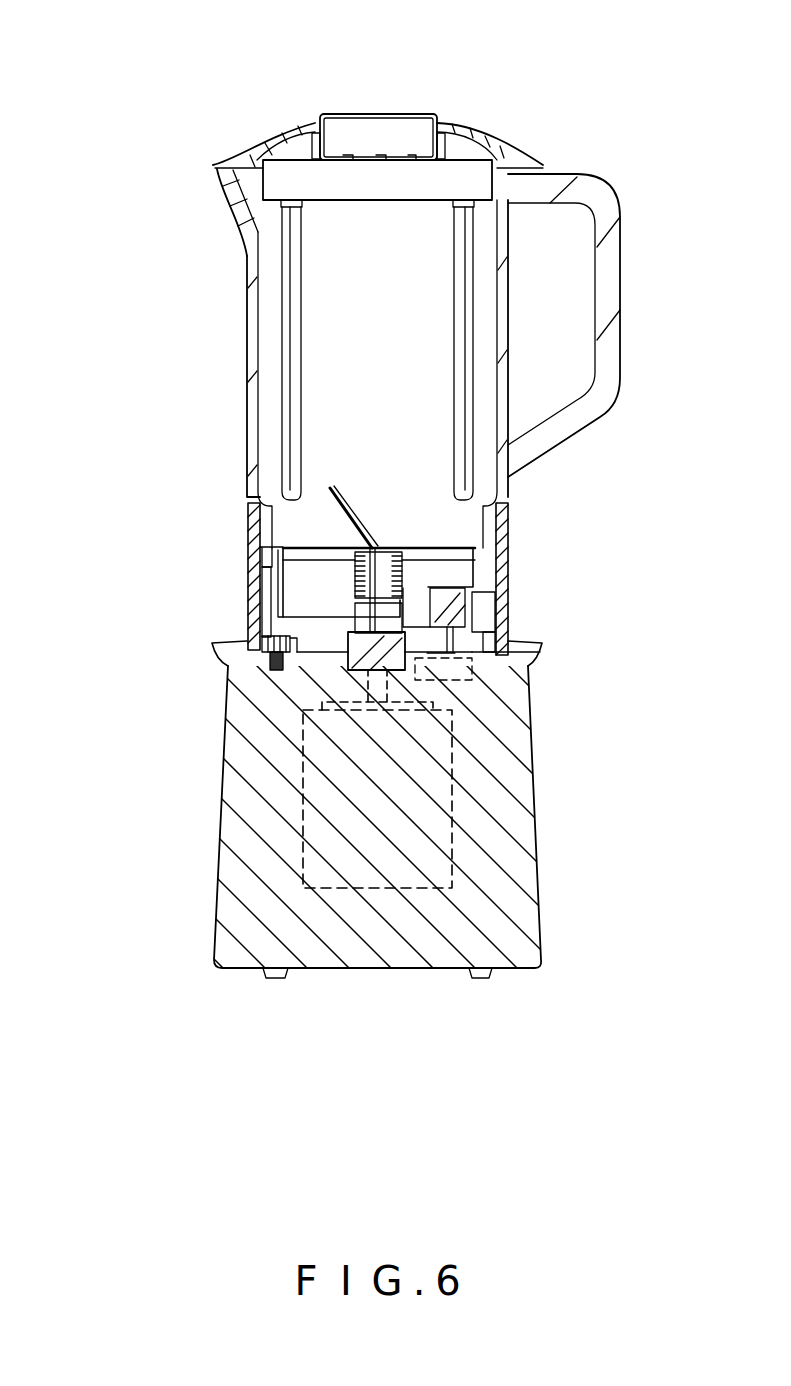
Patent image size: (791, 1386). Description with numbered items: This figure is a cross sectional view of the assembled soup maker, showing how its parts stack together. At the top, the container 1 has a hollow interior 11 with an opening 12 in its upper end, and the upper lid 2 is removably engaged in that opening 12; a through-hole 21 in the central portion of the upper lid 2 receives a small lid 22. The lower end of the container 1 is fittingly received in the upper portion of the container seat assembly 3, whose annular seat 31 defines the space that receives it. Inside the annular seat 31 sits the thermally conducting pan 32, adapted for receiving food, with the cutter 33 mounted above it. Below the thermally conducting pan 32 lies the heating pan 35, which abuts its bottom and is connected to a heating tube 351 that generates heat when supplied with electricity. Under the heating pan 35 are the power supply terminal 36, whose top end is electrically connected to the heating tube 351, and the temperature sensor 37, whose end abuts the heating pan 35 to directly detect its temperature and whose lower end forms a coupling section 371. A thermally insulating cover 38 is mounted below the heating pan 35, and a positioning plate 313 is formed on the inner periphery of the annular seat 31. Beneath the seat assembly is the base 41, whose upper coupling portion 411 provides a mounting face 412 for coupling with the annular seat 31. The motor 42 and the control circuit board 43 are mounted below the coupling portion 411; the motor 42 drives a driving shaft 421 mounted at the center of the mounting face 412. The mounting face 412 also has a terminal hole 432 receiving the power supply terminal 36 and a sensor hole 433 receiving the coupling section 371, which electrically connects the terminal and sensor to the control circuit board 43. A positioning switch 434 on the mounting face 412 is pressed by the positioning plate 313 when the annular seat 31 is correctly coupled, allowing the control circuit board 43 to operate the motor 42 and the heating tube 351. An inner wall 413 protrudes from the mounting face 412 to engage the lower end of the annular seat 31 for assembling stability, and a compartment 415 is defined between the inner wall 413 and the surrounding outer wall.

The container 1 is at (220, 272).
The hollow interior 11 is at (328, 318).
The opening 12 is at (340, 225).
The upper lid 2 is at (505, 140).
The through-hole 21 is at (445, 140).
The small lid 22 is at (398, 108).
The container seat assembly 3 is at (518, 538).
The annular seat 31 is at (445, 570).
The positioning plate 313 is at (265, 620).
The thermally conducting pan 32 is at (438, 590).
The cutter 33 is at (338, 505).
The heating pan 35 is at (283, 596).
The heating tube 351 is at (276, 612).
The power supply terminal 36 is at (512, 657).
The temperature sensor 37 is at (430, 612).
The coupling section 371 is at (450, 700).
The thermally insulating cover 38 is at (312, 650).
The base 41 is at (537, 850).
The coupling portion 411 is at (262, 622).
The mounting face 412 is at (335, 650).
The inner wall 413 is at (470, 625).
The compartment 415 is at (247, 650).
The motor 42 is at (303, 818).
The driving shaft 421 is at (348, 635).
The control circuit board 43 is at (455, 690).
The terminal hole 432 is at (510, 634).
The sensor hole 433 is at (455, 672).
The positioning switch 434 is at (270, 657).